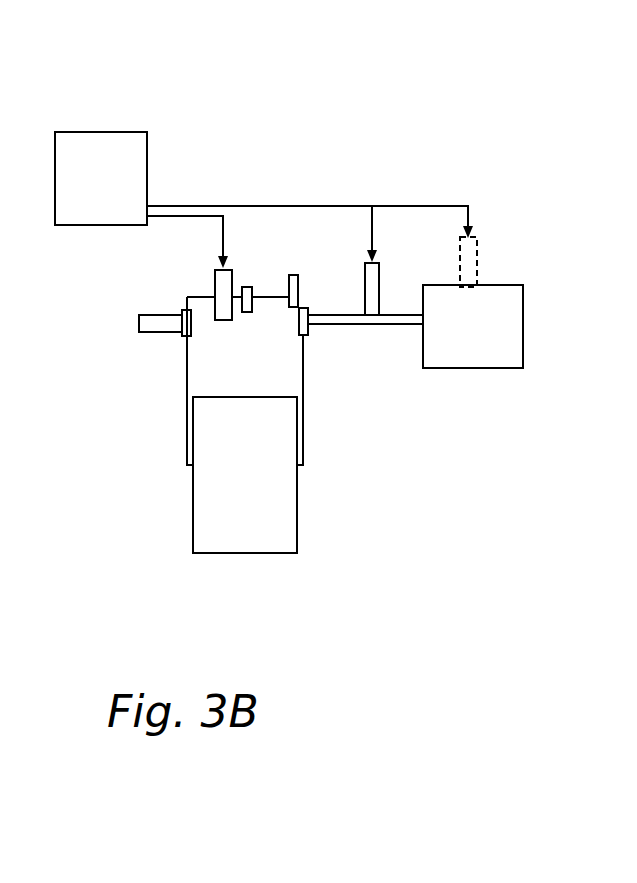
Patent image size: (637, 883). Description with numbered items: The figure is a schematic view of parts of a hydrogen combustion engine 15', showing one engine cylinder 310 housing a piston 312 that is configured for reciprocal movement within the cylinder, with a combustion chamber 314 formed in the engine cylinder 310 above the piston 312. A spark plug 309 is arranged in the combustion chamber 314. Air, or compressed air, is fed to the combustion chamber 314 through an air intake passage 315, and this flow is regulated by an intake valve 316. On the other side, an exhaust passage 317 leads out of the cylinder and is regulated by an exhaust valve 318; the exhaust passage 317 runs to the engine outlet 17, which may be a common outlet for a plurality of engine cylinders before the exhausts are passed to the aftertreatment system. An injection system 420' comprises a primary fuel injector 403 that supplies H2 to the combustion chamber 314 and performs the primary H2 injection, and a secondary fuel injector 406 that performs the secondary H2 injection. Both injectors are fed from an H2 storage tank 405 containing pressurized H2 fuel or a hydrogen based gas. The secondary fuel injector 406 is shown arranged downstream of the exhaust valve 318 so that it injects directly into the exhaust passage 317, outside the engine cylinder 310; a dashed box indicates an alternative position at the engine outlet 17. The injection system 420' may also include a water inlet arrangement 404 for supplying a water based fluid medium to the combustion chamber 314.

The hydrogen combustion engine 15' is at (288, 323).
The injection system 420' is at (310, 180).
The H2 storage tank 405 is at (60, 227).
The intake valve 316 is at (183, 313).
The primary fuel injector 403 is at (232, 278).
The spark plug 309 is at (246, 285).
The water inlet arrangement 404 is at (299, 288).
The secondary fuel injector 406 is at (380, 270).
The exhaust valve 318 is at (303, 338).
The exhaust passage 317 is at (358, 328).
The engine outlet 17 is at (480, 370).
The air intake passage 315 is at (160, 332).
The combustion chamber 314 is at (225, 357).
The engine cylinder 310 is at (183, 448).
The piston 312 is at (193, 553).